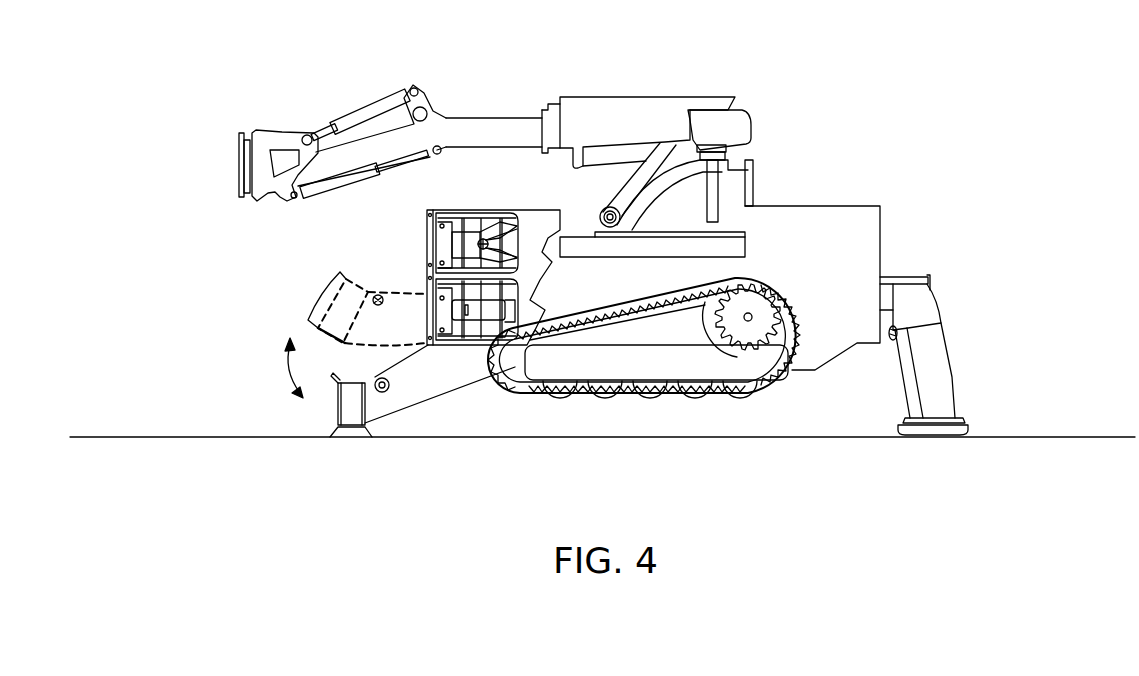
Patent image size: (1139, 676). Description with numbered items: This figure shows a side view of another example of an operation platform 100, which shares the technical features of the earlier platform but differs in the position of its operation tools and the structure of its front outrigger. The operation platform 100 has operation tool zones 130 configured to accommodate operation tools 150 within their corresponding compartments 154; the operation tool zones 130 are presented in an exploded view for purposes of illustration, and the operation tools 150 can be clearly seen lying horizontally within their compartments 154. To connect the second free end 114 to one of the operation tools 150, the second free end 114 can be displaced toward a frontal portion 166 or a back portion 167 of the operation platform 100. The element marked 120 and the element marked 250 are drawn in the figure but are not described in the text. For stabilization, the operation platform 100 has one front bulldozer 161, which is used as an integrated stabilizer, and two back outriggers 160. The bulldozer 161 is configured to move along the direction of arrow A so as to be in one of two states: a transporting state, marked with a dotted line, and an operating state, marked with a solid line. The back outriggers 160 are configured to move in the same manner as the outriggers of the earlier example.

The operation platform 100 is at (772, 70).
The second free end 114 is at (285, 143).
The weapon/turret assembly 120 is at (563, 84).
The operation tool zones 130 is at (428, 251).
The operation tools 150 is at (462, 240).
The compartments 154 is at (510, 230).
The back outriggers 160 is at (938, 394).
The front bulldozer 161 is at (333, 311).
The frontal portion 166 is at (427, 217).
The back portion 167 is at (882, 237).
The front support pad 250 is at (455, 312).